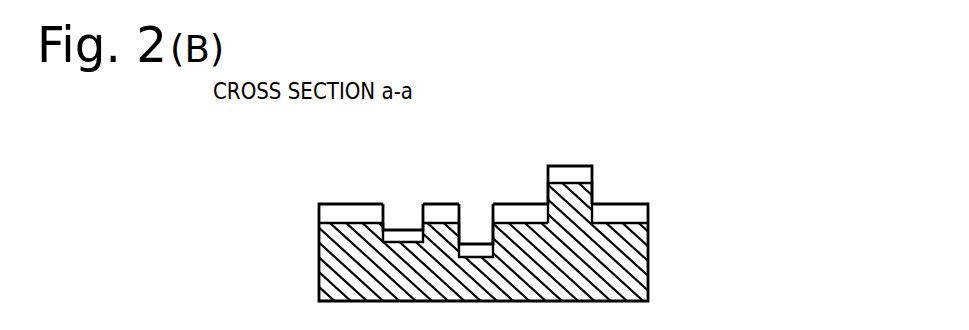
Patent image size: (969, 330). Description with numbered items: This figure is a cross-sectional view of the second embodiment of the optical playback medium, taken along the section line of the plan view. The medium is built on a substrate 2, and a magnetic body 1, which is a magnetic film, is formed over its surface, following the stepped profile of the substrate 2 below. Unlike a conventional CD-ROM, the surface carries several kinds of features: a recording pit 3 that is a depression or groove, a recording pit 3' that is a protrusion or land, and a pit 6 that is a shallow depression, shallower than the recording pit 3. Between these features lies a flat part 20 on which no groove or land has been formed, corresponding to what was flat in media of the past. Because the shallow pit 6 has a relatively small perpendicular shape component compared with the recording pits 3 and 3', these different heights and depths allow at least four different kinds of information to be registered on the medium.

The magnetic body 1 is at (608, 168).
The substrate 2 is at (648, 283).
The recording pit (depression) 3 is at (476, 196).
The recording pit (protrusion) 3' is at (578, 151).
The pit (shallow depression) 6 is at (389, 219).
The flat part 20 is at (523, 203).